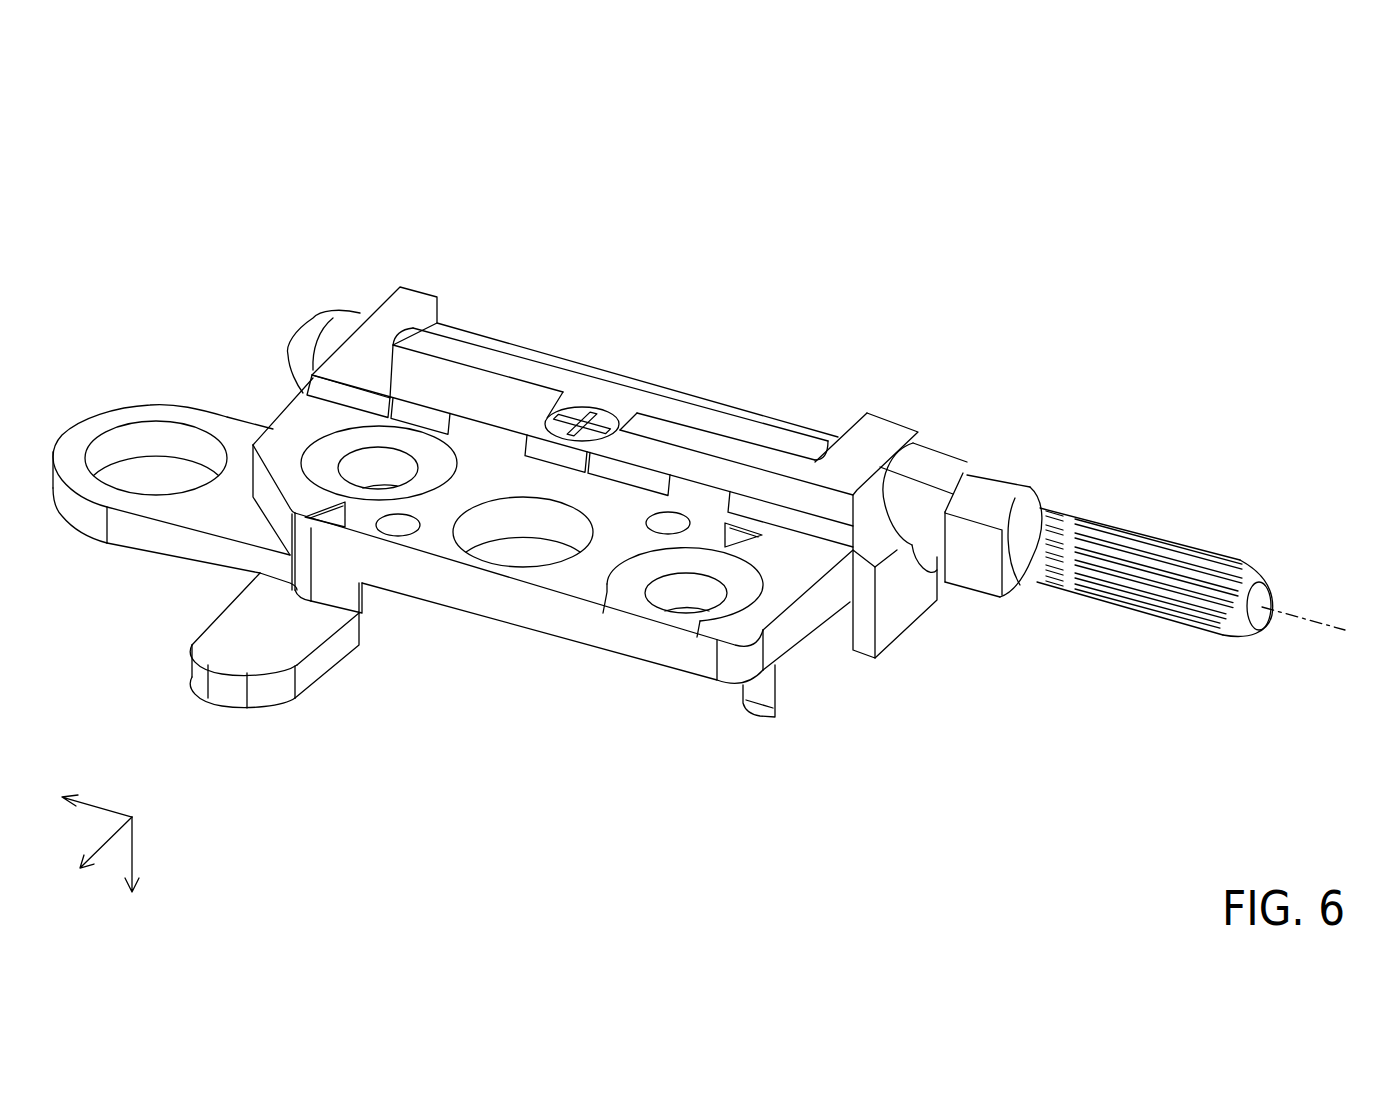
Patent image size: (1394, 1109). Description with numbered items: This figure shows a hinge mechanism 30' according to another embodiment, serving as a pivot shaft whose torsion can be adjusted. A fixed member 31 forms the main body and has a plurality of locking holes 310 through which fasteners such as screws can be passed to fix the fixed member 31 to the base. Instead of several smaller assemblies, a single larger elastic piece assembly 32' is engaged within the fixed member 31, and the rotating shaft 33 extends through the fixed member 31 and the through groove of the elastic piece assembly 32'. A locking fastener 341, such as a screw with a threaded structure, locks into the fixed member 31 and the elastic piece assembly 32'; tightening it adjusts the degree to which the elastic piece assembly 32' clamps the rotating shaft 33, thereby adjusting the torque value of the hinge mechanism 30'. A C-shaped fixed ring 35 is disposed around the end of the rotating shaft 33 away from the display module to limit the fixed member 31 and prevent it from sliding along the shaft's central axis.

The hinge mechanism 30' is at (702, 502).
The fixed member 31 is at (233, 713).
The locking holes 310 is at (530, 523).
The elastic piece assembly 32' is at (580, 435).
The rotating shaft 33 is at (1158, 555).
The locking fastener 341 is at (592, 412).
The fixed ring 35 is at (362, 314).